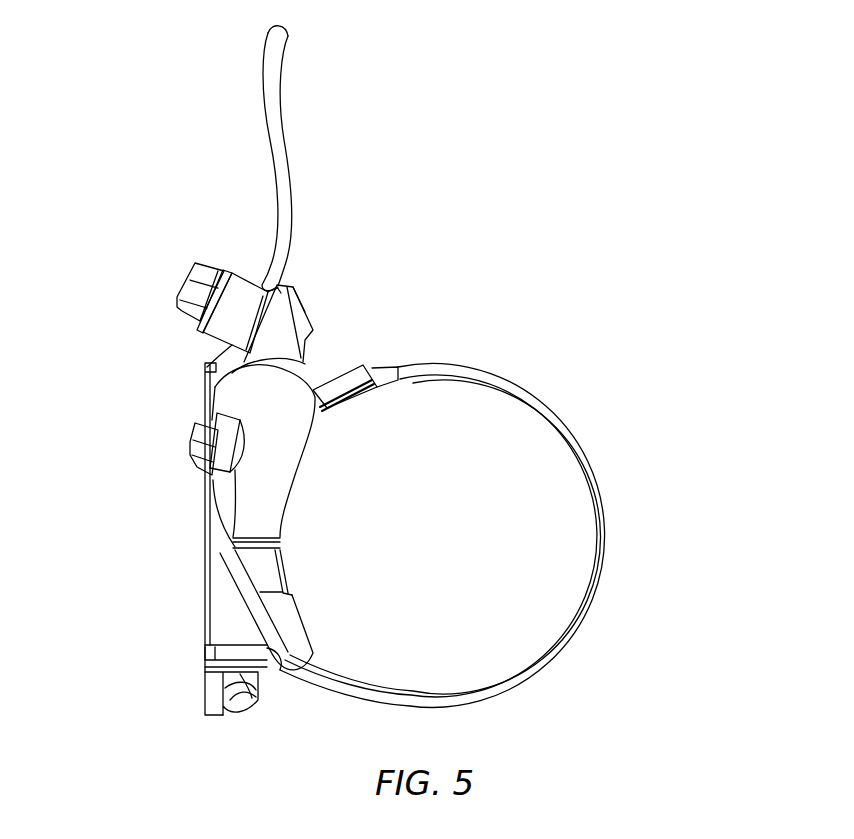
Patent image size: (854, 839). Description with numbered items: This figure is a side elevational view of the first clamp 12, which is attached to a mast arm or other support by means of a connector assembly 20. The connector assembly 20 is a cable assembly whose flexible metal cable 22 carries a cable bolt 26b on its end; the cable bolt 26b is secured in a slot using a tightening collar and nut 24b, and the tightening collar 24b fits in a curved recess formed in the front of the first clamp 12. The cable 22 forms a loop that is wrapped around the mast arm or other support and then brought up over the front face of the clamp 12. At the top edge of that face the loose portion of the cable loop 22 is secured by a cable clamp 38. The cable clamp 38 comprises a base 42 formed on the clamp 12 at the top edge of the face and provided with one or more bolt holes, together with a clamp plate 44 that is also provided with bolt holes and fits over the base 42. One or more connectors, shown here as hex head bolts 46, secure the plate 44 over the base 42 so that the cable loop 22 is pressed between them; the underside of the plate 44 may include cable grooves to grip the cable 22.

The first clamp 12 is at (537, 278).
The connector assembly 20 is at (585, 446).
The flexible metal cable 22 is at (268, 88).
The tightening collar and nut 24b is at (197, 467).
The cable bolt 26b is at (368, 370).
The cable clamp 38 is at (240, 269).
The base 42 is at (278, 333).
The clamp plate 44 is at (222, 322).
The hex head bolt 46 is at (190, 278).